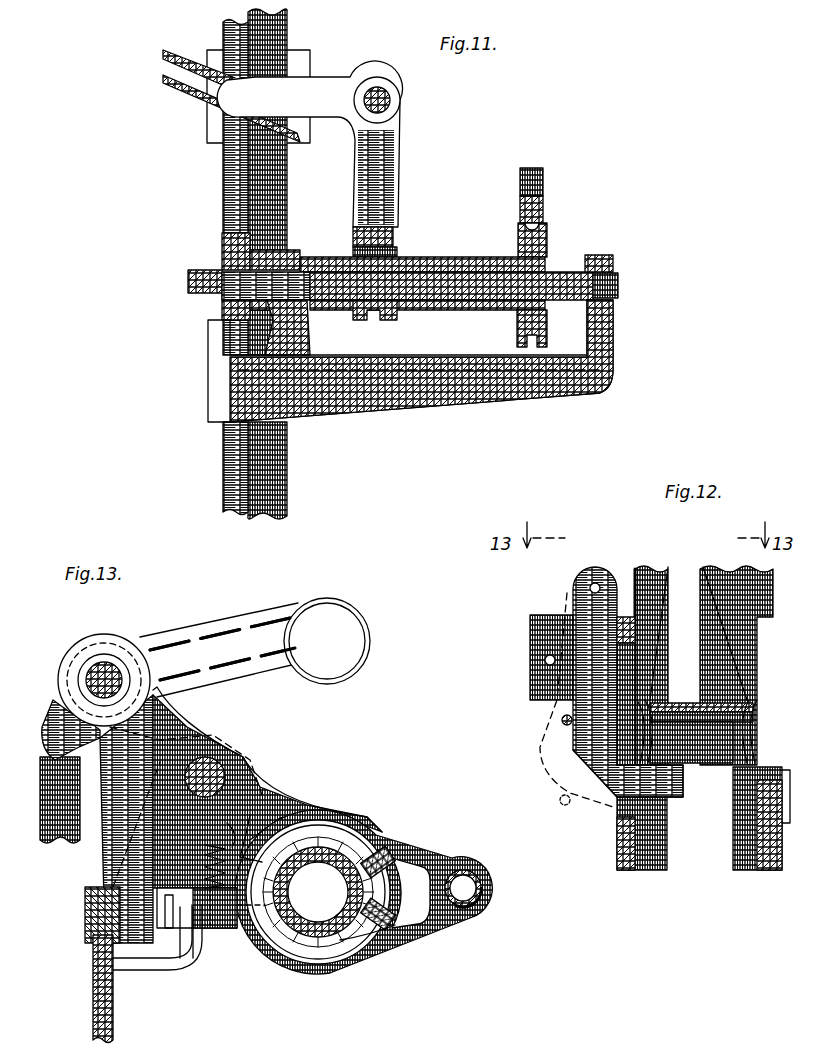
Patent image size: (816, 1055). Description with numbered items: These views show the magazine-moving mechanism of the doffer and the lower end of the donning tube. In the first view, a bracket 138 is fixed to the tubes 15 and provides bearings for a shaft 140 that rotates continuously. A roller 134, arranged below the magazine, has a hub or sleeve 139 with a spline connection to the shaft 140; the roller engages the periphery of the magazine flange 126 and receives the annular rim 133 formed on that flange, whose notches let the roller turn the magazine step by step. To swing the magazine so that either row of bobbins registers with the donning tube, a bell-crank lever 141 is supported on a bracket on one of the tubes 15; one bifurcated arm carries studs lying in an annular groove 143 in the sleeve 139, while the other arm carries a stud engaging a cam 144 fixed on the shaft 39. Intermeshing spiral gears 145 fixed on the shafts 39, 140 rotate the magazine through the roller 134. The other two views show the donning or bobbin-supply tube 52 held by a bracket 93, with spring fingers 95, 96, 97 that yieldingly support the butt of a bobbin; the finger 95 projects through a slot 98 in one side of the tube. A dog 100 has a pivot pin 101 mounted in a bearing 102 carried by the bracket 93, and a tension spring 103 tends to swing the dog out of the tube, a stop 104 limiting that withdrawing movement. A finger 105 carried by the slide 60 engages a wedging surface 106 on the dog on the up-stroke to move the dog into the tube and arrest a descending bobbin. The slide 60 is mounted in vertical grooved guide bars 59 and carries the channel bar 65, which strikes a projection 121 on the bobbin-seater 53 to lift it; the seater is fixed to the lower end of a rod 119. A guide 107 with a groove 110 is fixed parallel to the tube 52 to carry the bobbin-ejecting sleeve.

In FIG. 11, the tube 15 is at (278, 42).
In FIG. 11, the shaft 39 is at (228, 472).
In FIG. 11, the cam 144 is at (185, 75).
In FIG. 11, the bell-crank lever 141 is at (388, 135).
In FIG. 11, the flange 126 is at (545, 197).
In FIG. 11, the annular rim 133 is at (548, 225).
In FIG. 11, the roller 134 is at (548, 240).
In FIG. 11, the spiral gears 145 is at (218, 247).
In FIG. 11, the shaft 140 is at (620, 281).
In FIG. 11, the annular groove 143 is at (378, 318).
In FIG. 11, the hub or sleeve 139 is at (460, 312).
In FIG. 11, the bracket 138 is at (235, 390).
In FIG. 12, the donning or bobbin-supply tube 52 is at (636, 574).
In FIG. 13, the donning or bobbin-supply tube 52 is at (330, 822).
In FIG. 13, the bobbin-seater 53 is at (360, 612).
In FIG. 12, the bracket 93 is at (530, 632).
In FIG. 13, the bracket 93 is at (262, 790).
In FIG. 12, the spring finger 95 is at (637, 703).
In FIG. 13, the spring finger 95 is at (255, 860).
In FIG. 12, the spring finger 96 is at (756, 660).
In FIG. 13, the spring finger 96 is at (393, 852).
In FIG. 13, the spring finger 97 is at (400, 932).
In FIG. 12, the slot 98 is at (627, 667).
In FIG. 12, the dog 100 is at (660, 775).
In FIG. 13, the dog 100 is at (240, 930).
In FIG. 12, the pivot pin 101 is at (594, 584).
In FIG. 13, the pivot pin 101 is at (226, 832).
In FIG. 13, the bearing 102 is at (210, 885).
In FIG. 13, the tension spring 103 is at (215, 842).
In FIG. 12, the stop 104 is at (548, 662).
In FIG. 13, the stop 104 is at (165, 905).
In FIG. 12, the finger 105 is at (562, 723).
In FIG. 13, the finger 105 is at (190, 965).
In FIG. 12, the wedging surface 106 is at (580, 807).
In FIG. 13, the guide 107 is at (478, 892).
In FIG. 13, the groove 110 is at (480, 920).
In FIG. 13, the rod 119 is at (95, 685).
In FIG. 13, the projection 121 is at (48, 733).
In FIG. 13, the channel bar 65 is at (45, 812).
In FIG. 13, the grooved guide bar 59 is at (98, 918).
In FIG. 13, the slide 60 is at (100, 995).